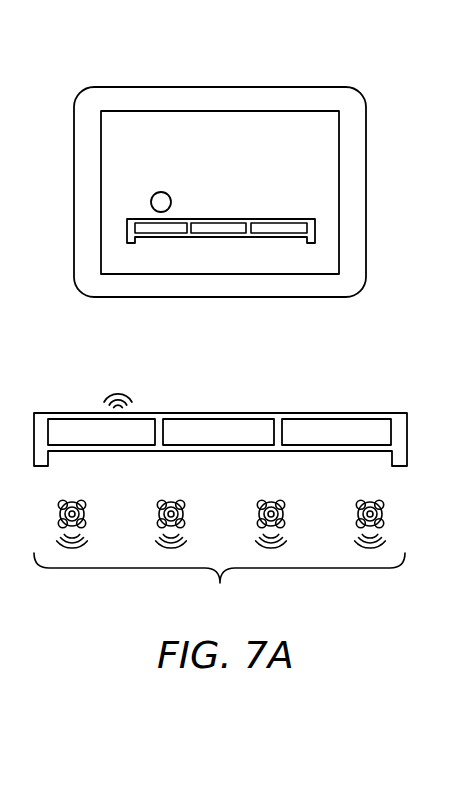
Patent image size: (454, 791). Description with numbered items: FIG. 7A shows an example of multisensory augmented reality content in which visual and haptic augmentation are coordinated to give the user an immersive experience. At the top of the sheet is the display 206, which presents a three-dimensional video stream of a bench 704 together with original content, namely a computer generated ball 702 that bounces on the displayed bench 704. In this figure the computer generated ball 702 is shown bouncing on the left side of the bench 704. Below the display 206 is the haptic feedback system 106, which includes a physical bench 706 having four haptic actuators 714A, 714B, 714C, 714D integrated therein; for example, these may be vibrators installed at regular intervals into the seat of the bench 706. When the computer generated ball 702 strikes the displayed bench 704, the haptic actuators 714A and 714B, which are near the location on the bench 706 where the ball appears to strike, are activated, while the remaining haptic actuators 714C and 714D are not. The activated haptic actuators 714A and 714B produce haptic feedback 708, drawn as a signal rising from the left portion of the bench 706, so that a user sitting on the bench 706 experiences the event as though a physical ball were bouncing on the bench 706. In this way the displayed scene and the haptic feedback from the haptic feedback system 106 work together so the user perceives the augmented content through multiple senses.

The display 206 is at (219, 85).
The computer generated ball 702 is at (163, 192).
The bench (3D video stream) 704 is at (220, 219).
The bench 706 is at (243, 412).
The haptic feedback 708 is at (118, 392).
The haptic actuator 714A is at (77, 500).
The haptic actuator 714B is at (176, 500).
The haptic actuator 714C is at (276, 500).
The haptic actuator 714D is at (375, 500).
The haptic feedback system 106 is at (219, 585).